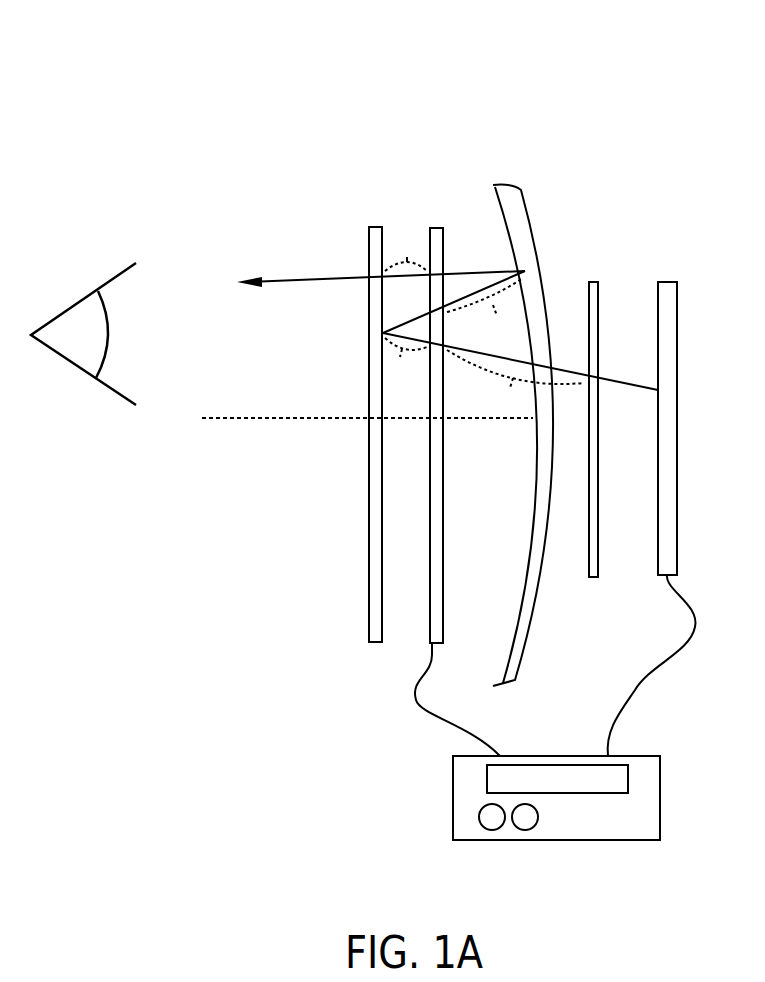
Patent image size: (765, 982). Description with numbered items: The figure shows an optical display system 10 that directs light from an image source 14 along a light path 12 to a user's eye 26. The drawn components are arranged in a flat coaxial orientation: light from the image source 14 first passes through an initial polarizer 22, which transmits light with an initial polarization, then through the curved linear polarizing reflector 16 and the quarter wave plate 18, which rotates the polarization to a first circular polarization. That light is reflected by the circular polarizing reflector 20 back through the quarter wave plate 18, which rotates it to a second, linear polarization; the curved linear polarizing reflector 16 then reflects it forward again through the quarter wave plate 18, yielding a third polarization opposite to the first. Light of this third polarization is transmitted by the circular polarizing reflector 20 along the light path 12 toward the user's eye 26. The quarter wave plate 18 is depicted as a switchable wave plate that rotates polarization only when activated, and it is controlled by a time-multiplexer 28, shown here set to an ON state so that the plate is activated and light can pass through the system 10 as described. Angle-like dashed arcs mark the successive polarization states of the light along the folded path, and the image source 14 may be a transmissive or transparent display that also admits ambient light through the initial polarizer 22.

The optical display system 10 is at (629, 108).
The light path 12 is at (338, 278).
The image source 14 is at (666, 282).
The curved linear polarizing reflector 16 is at (495, 186).
The quarter wave plate 18 is at (437, 228).
The circular polarizing reflector 20 is at (377, 227).
The initial polarizer 22 is at (593, 282).
The user's eye 26 is at (115, 278).
The time-multiplexer 28 is at (607, 832).